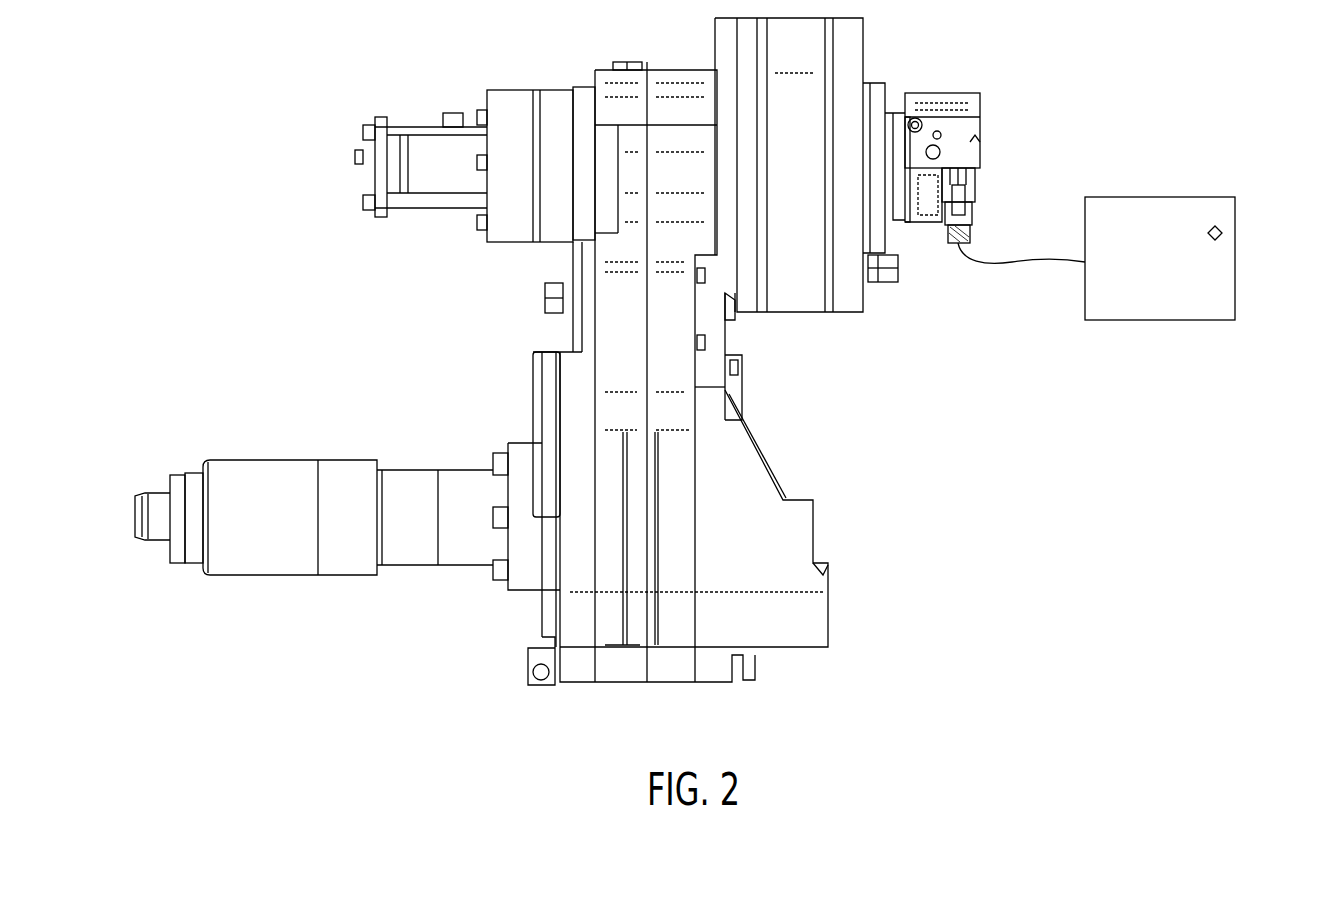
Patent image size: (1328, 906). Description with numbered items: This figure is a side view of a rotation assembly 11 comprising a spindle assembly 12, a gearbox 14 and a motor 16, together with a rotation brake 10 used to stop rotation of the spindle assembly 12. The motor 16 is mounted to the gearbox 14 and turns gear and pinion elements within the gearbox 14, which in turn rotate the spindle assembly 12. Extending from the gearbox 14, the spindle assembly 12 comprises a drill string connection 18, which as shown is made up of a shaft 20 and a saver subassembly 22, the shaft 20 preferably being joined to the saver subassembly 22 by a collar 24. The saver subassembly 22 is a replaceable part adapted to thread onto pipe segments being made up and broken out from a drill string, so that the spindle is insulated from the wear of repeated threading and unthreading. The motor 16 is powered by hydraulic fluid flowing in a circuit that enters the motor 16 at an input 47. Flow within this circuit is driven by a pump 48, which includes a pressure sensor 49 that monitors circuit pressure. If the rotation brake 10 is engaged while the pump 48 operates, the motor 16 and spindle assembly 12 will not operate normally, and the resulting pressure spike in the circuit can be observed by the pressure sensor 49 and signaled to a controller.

The rotation brake 10 is at (510, 90).
The rotation assembly 11 is at (190, 135).
The spindle assembly 12 is at (450, 612).
The gearbox 14 is at (728, 338).
The motor 16 is at (945, 95).
The drill string connection 18 is at (275, 578).
The shaft 20 is at (418, 470).
The saver subassembly 22 is at (170, 478).
The collar 24 is at (283, 460).
The input 47 is at (958, 250).
The pump 48 is at (1128, 205).
The pressure sensor 49 is at (1225, 230).